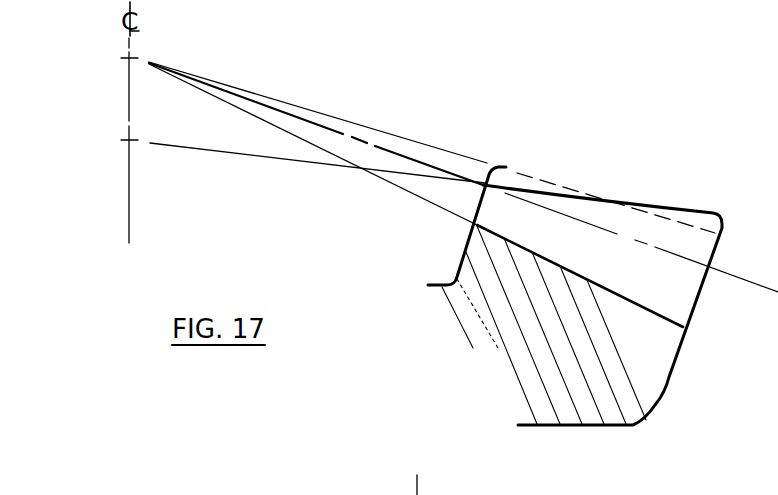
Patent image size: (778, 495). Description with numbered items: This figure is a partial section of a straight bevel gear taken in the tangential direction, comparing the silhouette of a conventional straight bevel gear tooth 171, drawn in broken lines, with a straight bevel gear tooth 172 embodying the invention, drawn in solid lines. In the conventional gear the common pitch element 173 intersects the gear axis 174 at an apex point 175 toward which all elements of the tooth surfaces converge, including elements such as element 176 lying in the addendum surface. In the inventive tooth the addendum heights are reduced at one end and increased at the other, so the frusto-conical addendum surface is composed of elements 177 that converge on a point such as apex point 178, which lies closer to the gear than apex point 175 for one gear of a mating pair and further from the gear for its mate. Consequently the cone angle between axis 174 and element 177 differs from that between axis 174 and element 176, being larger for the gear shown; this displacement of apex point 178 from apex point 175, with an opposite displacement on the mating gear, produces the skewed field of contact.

The conventional straight bevel gear tooth 171 is at (522, 175).
The straight bevel gear tooth embodying the invention 172 is at (688, 207).
The common pitch element 173 is at (323, 126).
The gear axis 174 is at (128, 97).
The apex point 175 is at (129, 58).
The addendum surface element 176 is at (388, 134).
The addendum surface element 177 is at (270, 161).
The apex point 178 is at (129, 142).